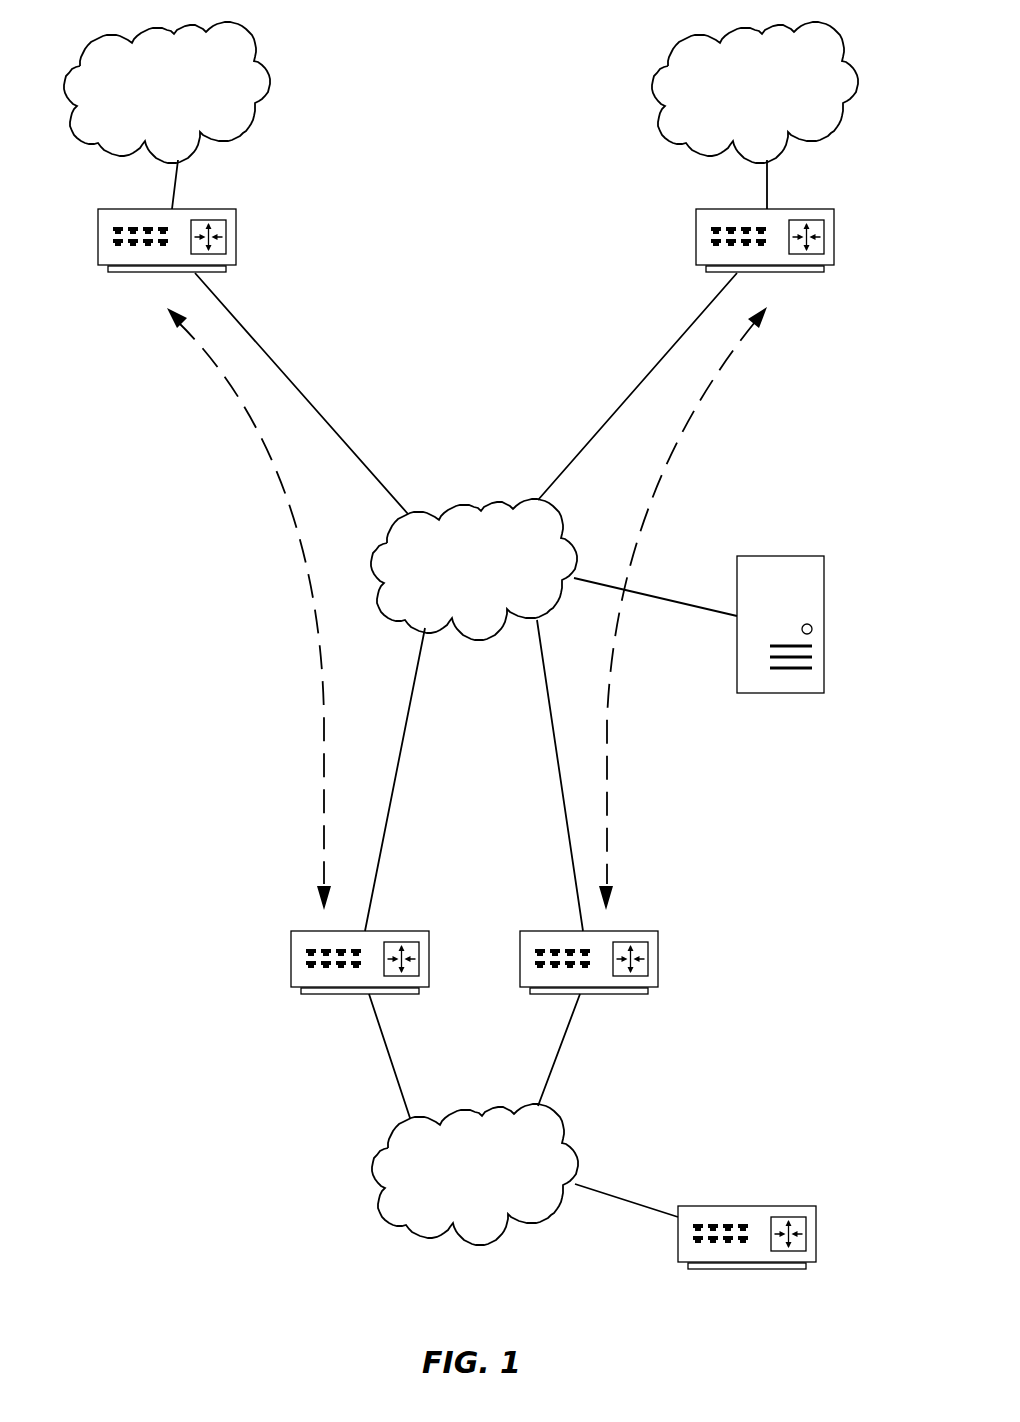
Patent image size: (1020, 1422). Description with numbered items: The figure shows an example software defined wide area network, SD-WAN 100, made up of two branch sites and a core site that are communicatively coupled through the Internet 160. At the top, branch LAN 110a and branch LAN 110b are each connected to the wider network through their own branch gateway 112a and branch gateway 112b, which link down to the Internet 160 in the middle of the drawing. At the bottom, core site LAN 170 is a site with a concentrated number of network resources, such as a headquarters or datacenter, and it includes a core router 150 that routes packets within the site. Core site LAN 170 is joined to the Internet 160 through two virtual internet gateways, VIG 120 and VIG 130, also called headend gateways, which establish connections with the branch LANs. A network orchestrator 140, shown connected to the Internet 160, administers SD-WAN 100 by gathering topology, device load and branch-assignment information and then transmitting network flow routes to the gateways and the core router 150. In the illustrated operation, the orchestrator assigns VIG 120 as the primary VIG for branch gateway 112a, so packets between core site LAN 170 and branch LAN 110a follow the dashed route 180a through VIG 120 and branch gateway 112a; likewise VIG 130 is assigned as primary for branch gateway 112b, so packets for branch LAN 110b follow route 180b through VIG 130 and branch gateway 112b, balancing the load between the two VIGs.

The software defined wide area network (SD-WAN) 100 is at (60, 22).
The branch LAN 110a is at (167, 92).
The branch LAN 110b is at (755, 92).
The branch gateway 112a is at (236, 232).
The branch gateway 112b is at (696, 245).
The virtual internet gateway (VIG) 120 is at (291, 972).
The virtual internet gateway (VIG) 130 is at (657, 965).
The network orchestrator 140 is at (824, 650).
The core router 150 is at (816, 1207).
The Internet 160 is at (474, 569).
The core site LAN 170 is at (475, 1174).
The route 180a is at (307, 575).
The route 180b is at (640, 523).